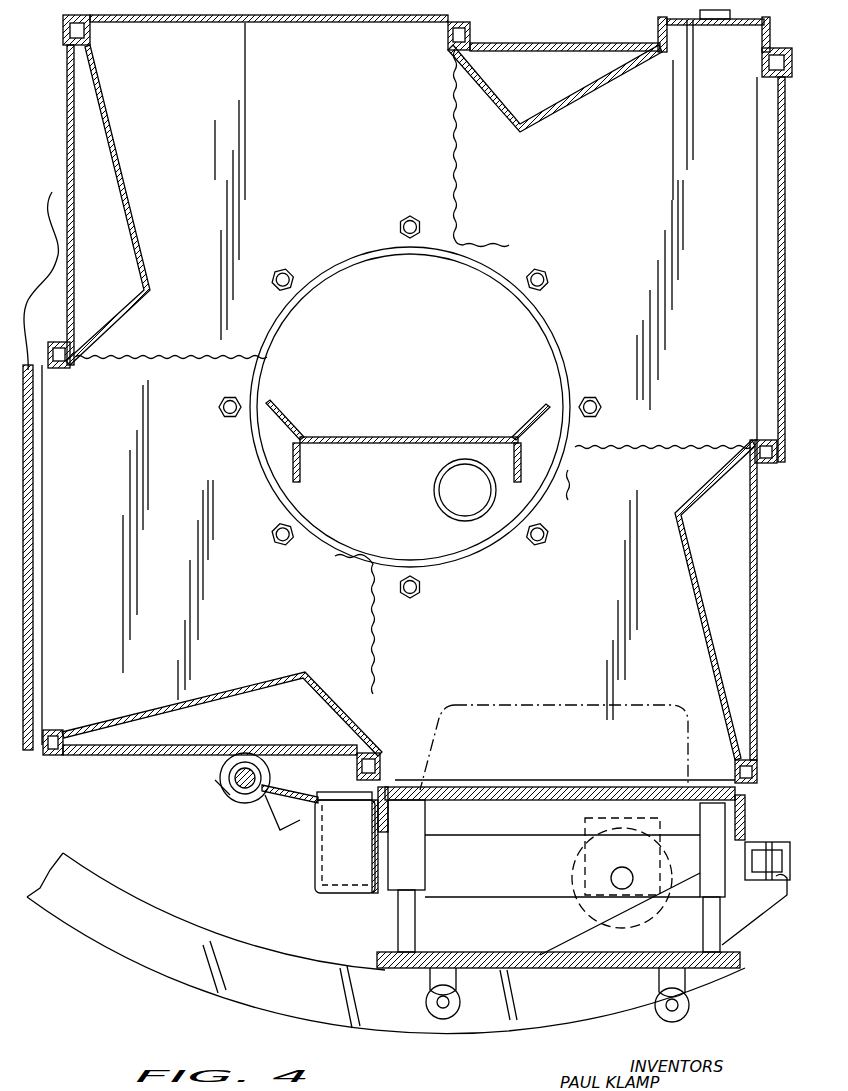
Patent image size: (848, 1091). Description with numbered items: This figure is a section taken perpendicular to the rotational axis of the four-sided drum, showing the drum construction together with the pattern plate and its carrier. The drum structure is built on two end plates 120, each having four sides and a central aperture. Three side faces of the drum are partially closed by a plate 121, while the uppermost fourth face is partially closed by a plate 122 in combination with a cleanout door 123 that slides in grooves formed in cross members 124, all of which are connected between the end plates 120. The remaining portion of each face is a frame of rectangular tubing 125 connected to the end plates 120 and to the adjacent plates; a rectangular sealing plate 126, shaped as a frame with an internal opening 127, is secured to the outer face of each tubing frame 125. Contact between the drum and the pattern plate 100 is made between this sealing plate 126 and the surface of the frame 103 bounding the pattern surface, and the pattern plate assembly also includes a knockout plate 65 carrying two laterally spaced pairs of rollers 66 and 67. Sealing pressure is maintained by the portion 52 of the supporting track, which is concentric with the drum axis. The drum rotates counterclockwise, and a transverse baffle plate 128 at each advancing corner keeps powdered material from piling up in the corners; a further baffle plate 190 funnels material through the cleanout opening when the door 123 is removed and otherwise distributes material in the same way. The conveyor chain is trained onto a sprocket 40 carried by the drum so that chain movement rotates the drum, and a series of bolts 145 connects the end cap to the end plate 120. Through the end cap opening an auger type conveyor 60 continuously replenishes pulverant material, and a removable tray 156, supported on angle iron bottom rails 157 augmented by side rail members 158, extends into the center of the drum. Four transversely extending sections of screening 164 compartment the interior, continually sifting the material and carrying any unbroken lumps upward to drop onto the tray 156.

The sprocket 40 is at (60, 196).
The portion of the supporting track 52 is at (410, 1020).
The auger type conveyor 60 is at (440, 500).
The knockout plate 65 is at (560, 968).
The rollers 66 is at (450, 1016).
The rollers 67 is at (685, 1018).
The pattern plate 100 is at (518, 800).
The frame 103 is at (750, 800).
The end plates 120 is at (312, 173).
The plate 121 is at (67, 156).
The plate 122 is at (566, 44).
The cleanout door 123 is at (700, 22).
The cross members 124 is at (658, 36).
The frame of rectangular tubing 125 is at (92, 30).
The sealing plate 126 is at (445, 28).
The internal opening 127 is at (372, 22).
The transverse baffle plate 128 is at (700, 633).
The bolts 145 is at (420, 588).
The removable tray 156 is at (415, 437).
The angle iron bottom rails 157 is at (305, 462).
The side rail members 158 is at (285, 430).
The sections of screening 164 is at (470, 232).
The baffle plate 190 is at (590, 90).